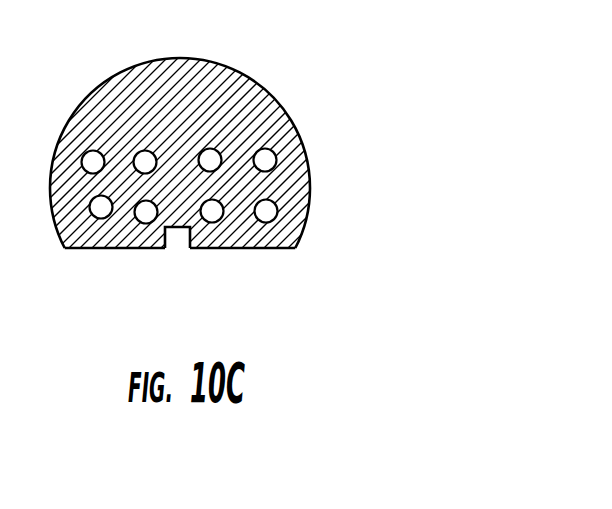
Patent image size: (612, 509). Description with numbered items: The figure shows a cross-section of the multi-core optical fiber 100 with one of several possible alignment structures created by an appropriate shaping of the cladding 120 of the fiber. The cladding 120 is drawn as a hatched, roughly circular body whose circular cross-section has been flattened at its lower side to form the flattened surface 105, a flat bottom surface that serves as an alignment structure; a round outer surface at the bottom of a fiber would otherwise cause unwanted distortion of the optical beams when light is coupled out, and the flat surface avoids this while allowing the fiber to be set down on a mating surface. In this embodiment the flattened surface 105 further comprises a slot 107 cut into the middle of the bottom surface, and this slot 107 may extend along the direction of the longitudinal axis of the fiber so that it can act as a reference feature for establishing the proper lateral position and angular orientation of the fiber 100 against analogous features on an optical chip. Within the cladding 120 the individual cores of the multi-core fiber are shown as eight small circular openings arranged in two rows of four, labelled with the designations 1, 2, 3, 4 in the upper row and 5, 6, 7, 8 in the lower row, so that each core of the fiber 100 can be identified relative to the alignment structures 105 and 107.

The multi-core optical fiber 100 is at (259, 161).
The cladding 120 is at (238, 91).
The flattened surface 105 is at (224, 248).
The slot 107 is at (178, 234).
The contact cavity 1 is at (92, 145).
The contact cavity 2 is at (143, 145).
The contact cavity 3 is at (210, 144).
The contact cavity 4 is at (265, 144).
The contact cavity 5 is at (94, 195).
The contact cavity 6 is at (141, 197).
The contact cavity 7 is at (205, 197).
The contact cavity 8 is at (259, 197).